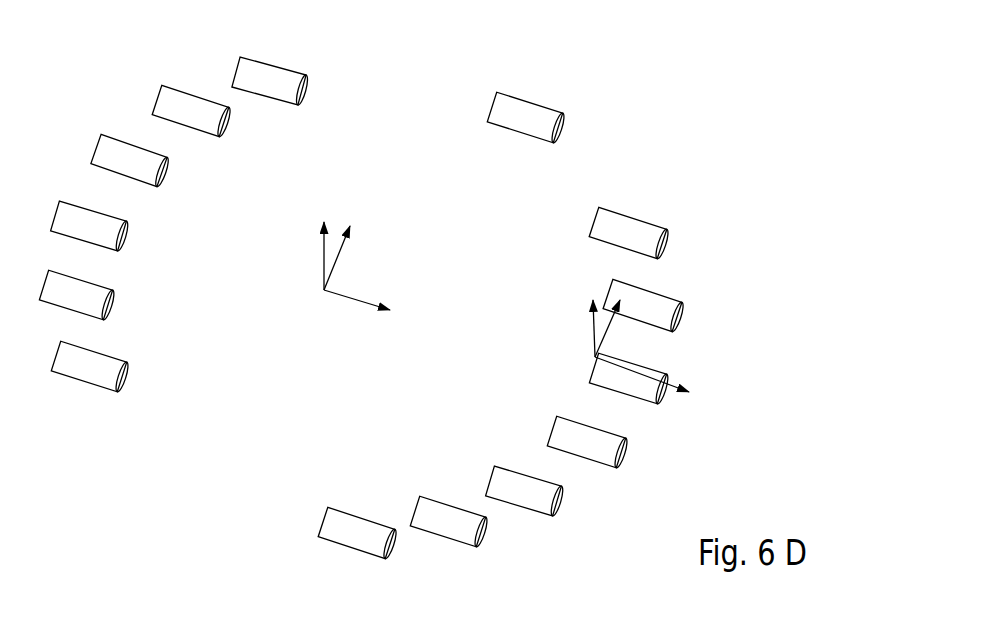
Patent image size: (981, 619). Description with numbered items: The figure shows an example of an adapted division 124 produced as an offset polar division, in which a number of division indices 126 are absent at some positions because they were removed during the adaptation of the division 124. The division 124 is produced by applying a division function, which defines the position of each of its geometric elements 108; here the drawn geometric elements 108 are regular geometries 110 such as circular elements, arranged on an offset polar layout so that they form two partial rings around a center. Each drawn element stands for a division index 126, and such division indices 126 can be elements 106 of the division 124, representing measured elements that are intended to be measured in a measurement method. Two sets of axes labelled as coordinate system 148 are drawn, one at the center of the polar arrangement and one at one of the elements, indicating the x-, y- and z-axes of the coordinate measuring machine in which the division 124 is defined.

The element 106 is at (587, 80).
The geometric element 108 is at (587, 80).
The regular geometry 110 is at (587, 80).
The division index 126 is at (520, 98).
The division 124 is at (722, 164).
The coordinate system 148 is at (382, 259).